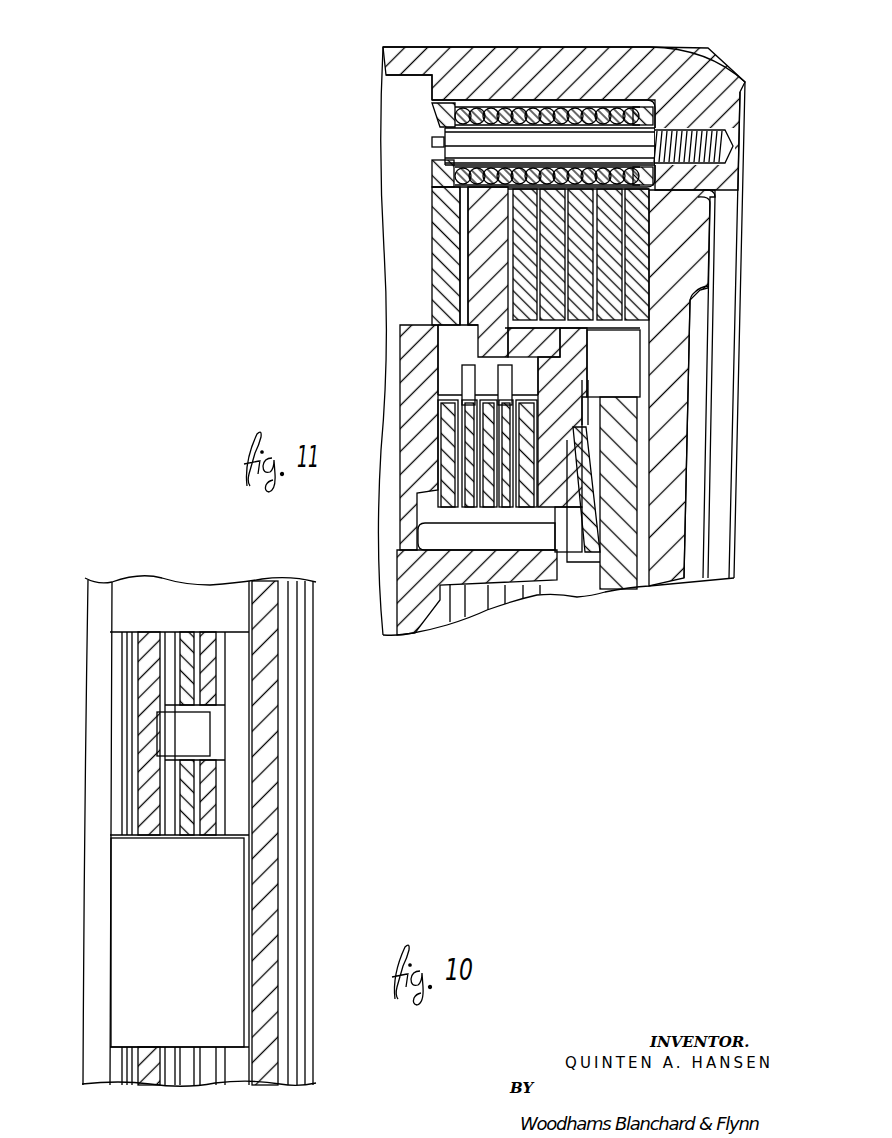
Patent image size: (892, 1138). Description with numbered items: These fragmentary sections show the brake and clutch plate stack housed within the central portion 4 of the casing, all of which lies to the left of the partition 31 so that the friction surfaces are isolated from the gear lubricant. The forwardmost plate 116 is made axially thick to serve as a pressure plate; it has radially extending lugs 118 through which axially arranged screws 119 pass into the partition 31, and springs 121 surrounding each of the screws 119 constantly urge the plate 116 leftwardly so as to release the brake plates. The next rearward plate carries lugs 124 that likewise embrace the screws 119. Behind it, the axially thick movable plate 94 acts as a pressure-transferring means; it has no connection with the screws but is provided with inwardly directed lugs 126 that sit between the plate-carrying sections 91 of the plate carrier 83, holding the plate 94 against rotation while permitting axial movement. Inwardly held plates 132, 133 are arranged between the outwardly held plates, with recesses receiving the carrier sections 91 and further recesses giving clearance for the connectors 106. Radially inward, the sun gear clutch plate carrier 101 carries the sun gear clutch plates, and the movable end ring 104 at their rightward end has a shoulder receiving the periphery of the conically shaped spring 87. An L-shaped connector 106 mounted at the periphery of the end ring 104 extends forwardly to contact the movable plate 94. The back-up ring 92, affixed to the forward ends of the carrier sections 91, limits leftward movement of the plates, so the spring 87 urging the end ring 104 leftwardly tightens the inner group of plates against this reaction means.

In FIG. 11, the central portion 4 is at (673, 47).
In FIG. 11, the partition 31 is at (740, 182).
In FIG. 10, the partition 31 is at (265, 712).
In FIG. 10, the plate carrier 83 is at (246, 768).
In FIG. 11, the spring 87 is at (583, 455).
In FIG. 11, the plate-carrier sections 91 is at (447, 361).
In FIG. 10, the plate-carrier sections 91 is at (177, 942).
In FIG. 11, the back-up ring 92 is at (407, 425).
In FIG. 10, the back-up ring 92 is at (97, 792).
In FIG. 11, the movable plate 94 is at (469, 330).
In FIG. 10, the movable plate 94 is at (151, 642).
In FIG. 11, the sun gear clutch plate carrier 101 is at (418, 584).
In FIG. 11, the movable end ring 104 is at (578, 370).
In FIG. 11, the connector 106 is at (552, 341).
In FIG. 10, the connector 106 is at (191, 732).
In FIG. 11, the pressure plate 116 is at (437, 228).
In FIG. 11, the radially extending lugs 118 is at (440, 110).
In FIG. 11, the screws 119 is at (470, 137).
In FIG. 11, the springs 121 is at (548, 112).
In FIG. 11, the lugs 124 is at (452, 105).
In FIG. 11, the inwardly directed lugs 126 is at (489, 345).
In FIG. 10, the inwardly held plate 132 is at (208, 640).
In FIG. 10, the inwardly held plate 133 is at (188, 646).